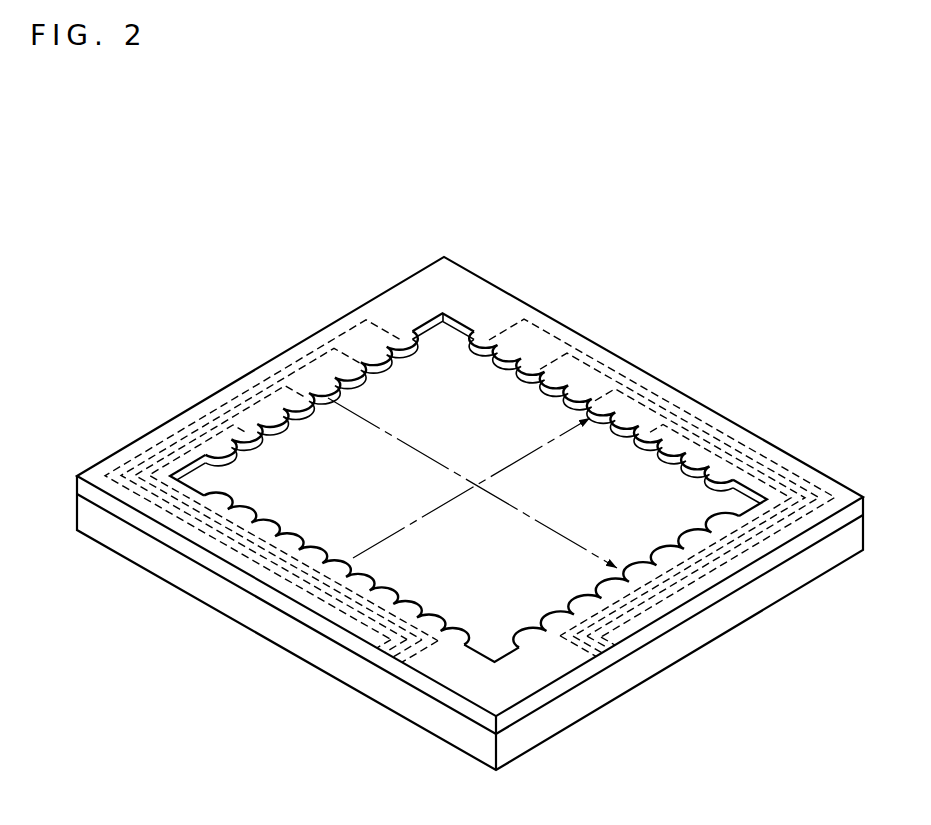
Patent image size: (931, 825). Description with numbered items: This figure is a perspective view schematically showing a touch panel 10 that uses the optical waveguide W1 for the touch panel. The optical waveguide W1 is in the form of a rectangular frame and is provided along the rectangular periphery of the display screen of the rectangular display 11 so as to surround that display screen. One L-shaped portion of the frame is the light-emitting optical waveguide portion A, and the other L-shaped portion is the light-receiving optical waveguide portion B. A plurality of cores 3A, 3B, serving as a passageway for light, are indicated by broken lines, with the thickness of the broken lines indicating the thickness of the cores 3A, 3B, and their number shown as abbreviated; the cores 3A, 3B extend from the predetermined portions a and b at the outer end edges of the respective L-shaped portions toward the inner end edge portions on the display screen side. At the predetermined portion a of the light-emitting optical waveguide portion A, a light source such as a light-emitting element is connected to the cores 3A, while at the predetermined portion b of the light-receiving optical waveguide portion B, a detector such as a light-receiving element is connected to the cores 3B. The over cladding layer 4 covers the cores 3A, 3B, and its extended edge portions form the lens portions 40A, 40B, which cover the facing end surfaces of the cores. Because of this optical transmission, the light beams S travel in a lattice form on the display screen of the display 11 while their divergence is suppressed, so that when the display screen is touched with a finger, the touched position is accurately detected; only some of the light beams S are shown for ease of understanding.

The touch panel 10 is at (371, 255).
The optical waveguide for the touch panel W1 is at (429, 255).
The display 11 is at (450, 357).
The light beams S is at (438, 467).
The over cladding layer 4 is at (577, 345).
The lens portion 40A is at (272, 527).
The lens portion 40B is at (673, 548).
The light-emitting optical waveguide portion A is at (176, 413).
The light-receiving optical waveguide portion B is at (818, 455).
The cores 3A is at (250, 567).
The cores 3B is at (742, 560).
The predetermined portion a is at (376, 650).
The predetermined portion b is at (624, 648).